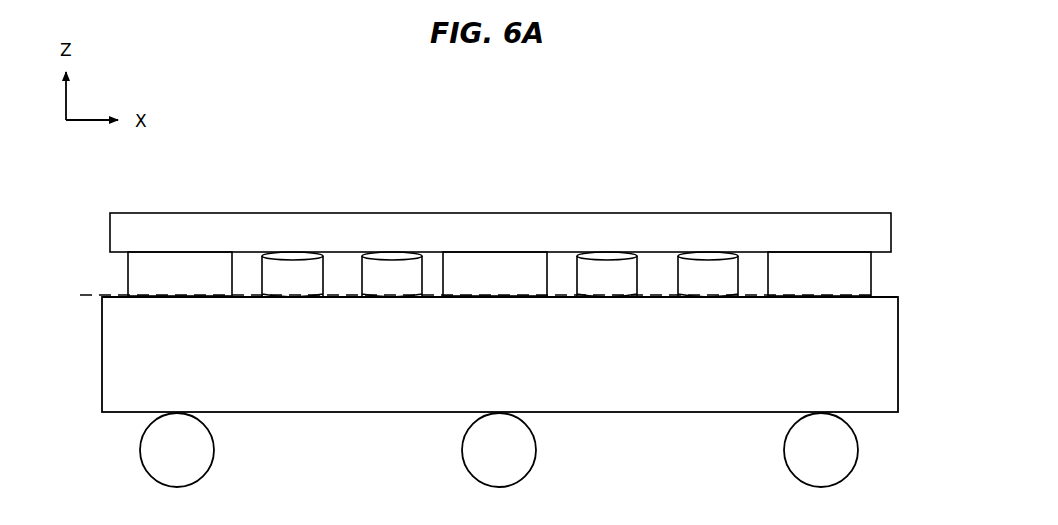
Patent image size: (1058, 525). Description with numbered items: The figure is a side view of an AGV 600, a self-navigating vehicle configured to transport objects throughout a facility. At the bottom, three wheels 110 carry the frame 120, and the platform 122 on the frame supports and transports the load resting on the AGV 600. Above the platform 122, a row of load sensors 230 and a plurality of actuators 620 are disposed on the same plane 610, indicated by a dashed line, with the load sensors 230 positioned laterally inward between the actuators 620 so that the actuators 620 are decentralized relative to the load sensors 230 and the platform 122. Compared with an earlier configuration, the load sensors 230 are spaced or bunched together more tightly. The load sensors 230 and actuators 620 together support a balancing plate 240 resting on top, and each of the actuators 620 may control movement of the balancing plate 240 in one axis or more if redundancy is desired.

The AGV 600 is at (322, 128).
The balancing plate 240 is at (500, 232).
The actuators 620 is at (499, 274).
The load sensors 230 is at (500, 274).
The plane 610 is at (110, 292).
The frame 120 is at (879, 355).
The platform 122 is at (891, 297).
The wheels 110 is at (210, 465).